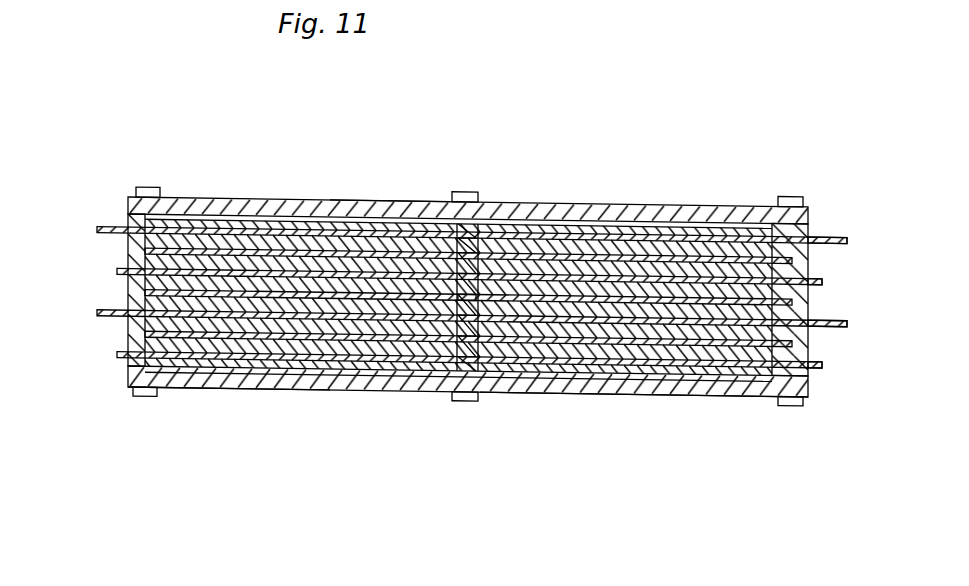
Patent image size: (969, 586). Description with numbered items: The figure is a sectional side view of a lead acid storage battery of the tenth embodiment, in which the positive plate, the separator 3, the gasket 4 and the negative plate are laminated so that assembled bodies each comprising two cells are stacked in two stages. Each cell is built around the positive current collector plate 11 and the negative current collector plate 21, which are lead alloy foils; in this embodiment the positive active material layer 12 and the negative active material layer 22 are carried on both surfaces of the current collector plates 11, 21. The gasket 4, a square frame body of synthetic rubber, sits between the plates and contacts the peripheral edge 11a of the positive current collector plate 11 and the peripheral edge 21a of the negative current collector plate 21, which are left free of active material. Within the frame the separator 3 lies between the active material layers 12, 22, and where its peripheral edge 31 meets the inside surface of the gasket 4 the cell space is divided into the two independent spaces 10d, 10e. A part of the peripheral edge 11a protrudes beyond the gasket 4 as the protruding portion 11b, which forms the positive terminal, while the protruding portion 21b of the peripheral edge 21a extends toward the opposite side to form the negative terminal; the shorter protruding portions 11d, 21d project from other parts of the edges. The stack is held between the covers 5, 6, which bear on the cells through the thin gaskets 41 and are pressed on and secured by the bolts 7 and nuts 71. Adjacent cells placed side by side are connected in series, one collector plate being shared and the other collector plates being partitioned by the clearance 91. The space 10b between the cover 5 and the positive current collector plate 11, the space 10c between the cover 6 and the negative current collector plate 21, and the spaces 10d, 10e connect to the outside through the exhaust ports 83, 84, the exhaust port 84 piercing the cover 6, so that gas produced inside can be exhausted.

The separator 3 is at (599, 383).
The gasket 4 is at (127, 342).
The cover 5 is at (184, 392).
The cover 6 is at (178, 198).
The bolt 7 is at (456, 191).
The space 10b is at (168, 389).
The space 10c is at (405, 227).
The space 10d is at (745, 395).
The space 10e is at (764, 377).
The positive current collector plate 11 is at (548, 374).
The peripheral edge 11a is at (197, 389).
The protruding portion 11b is at (843, 331).
The protruding portion 11d is at (117, 358).
The positive active material layer 12 is at (575, 392).
The negative current collector plate 21 is at (652, 374).
The peripheral edge 21a is at (185, 212).
The protruding portion 21b is at (104, 317).
The protruding portion 21d is at (815, 374).
The negative active material layer 22 is at (683, 394).
The peripheral edge of separator 31 is at (492, 372).
The thin gasket 41 is at (127, 374).
The nut 71 is at (462, 399).
The exhaust port 83 is at (476, 374).
The exhaust port 84 is at (487, 205).
The clearance 91 is at (455, 372).